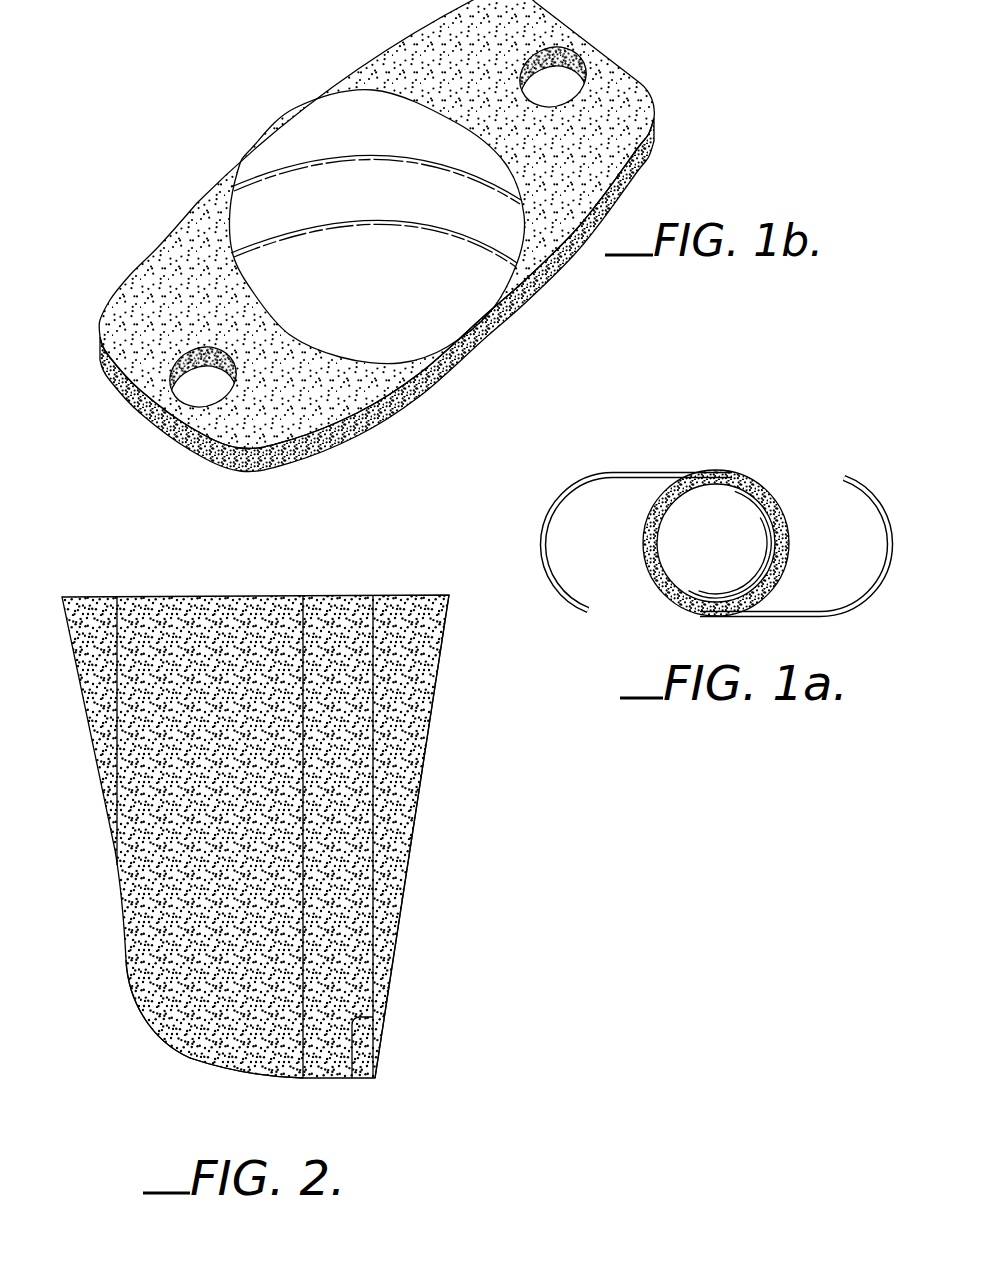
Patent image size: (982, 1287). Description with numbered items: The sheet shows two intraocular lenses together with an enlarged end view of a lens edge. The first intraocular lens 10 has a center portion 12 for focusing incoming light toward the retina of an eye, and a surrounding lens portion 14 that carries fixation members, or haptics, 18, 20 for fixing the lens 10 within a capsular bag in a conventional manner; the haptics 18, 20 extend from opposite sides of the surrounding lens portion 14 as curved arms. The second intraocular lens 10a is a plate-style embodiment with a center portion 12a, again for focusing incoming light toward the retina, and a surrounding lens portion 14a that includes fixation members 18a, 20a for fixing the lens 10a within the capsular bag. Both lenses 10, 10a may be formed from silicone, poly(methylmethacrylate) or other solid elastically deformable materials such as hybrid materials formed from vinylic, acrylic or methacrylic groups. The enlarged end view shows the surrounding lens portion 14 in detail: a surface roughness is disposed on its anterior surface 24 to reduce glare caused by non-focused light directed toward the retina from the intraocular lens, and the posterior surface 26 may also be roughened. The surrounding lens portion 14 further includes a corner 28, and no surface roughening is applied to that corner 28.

In FIG. 1A, the intraocular lens 10 is at (725, 540).
In FIG. 1A, the center portion 12 is at (727, 560).
In FIG. 1A, the surrounding lens portion 14 is at (673, 608).
In FIG. 2, the surrounding lens portion 14 is at (256, 864).
In FIG. 1A, the fixation member 18 is at (860, 607).
In FIG. 1A, the fixation member 20 is at (597, 474).
In FIG. 2, the anterior surface 24 is at (150, 1020).
In FIG. 2, the posterior surface 26 is at (403, 917).
In FIG. 2, the corner 28 is at (373, 1078).
In FIG. 1B, the intraocular lens 10a is at (408, 238).
In FIG. 1B, the center portion 12a is at (397, 368).
In FIG. 1B, the surrounding lens portion 14a is at (178, 221).
In FIG. 1B, the fixation member 18a is at (183, 447).
In FIG. 1B, the fixation member 20a is at (642, 70).